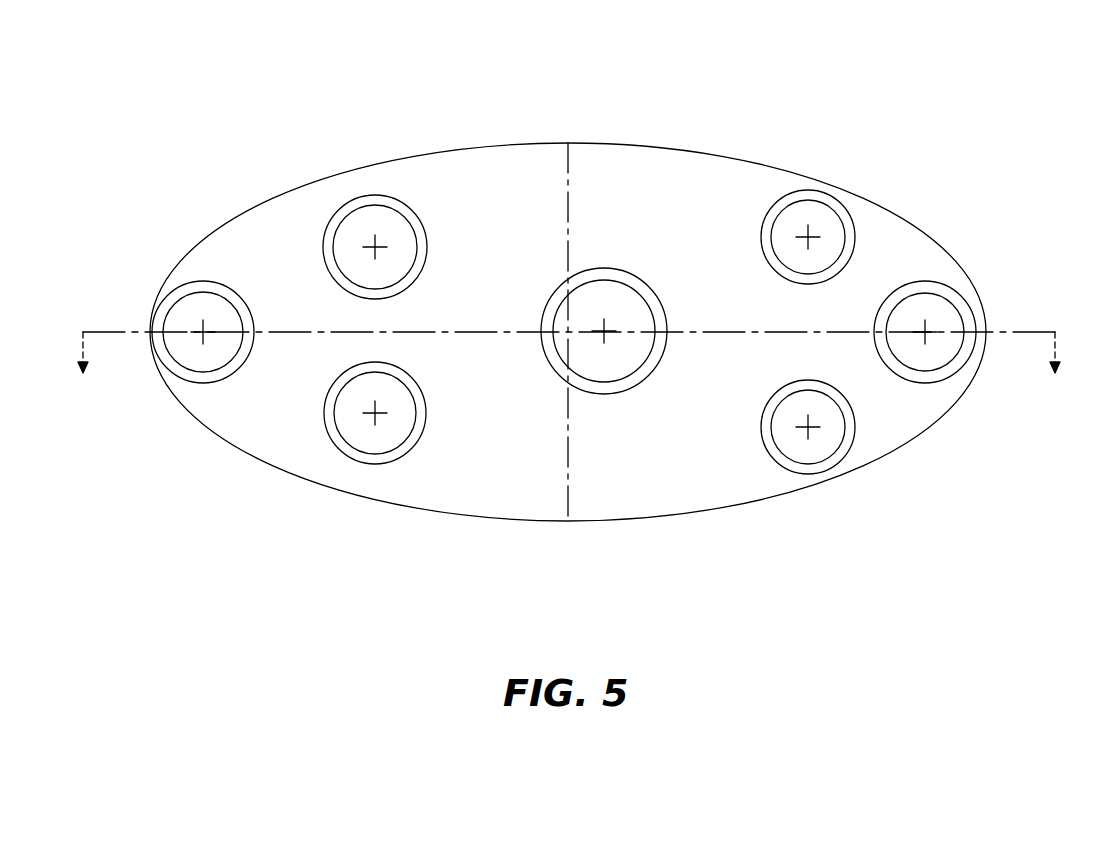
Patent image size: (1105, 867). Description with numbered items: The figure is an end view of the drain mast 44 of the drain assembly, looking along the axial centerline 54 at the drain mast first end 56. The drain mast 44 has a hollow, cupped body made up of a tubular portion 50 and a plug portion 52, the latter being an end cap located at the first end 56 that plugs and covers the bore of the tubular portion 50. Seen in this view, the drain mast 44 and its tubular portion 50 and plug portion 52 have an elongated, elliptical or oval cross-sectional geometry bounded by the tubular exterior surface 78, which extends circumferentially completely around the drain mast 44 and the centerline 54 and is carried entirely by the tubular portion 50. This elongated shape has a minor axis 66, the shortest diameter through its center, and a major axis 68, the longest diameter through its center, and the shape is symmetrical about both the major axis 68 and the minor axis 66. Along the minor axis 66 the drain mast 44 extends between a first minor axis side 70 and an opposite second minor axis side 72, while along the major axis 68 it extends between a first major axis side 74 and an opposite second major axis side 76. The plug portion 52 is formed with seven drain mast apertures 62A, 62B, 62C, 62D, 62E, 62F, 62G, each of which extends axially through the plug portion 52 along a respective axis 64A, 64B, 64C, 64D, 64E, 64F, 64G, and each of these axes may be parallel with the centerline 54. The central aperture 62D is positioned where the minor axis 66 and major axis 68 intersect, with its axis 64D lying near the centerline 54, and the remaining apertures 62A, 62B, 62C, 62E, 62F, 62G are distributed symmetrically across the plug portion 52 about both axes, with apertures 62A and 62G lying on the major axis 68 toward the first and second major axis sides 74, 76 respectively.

The drain mast 44 is at (924, 100).
The tubular portion 50 is at (903, 216).
The plug portion 52 is at (697, 192).
The axial centerline 54 is at (567, 320).
The first end 56 is at (267, 218).
The drain mast aperture 62A is at (205, 355).
The drain mast aperture 62B is at (362, 220).
The drain mast aperture 62C is at (360, 437).
The drain mast aperture 62D is at (609, 365).
The drain mast aperture 62E is at (822, 216).
The drain mast aperture 62F is at (808, 452).
The drain mast aperture 62G is at (925, 326).
The axis 64A is at (206, 330).
The axis 64B is at (380, 244).
The axis 64C is at (380, 413).
The axis 64D is at (606, 330).
The axis 64E is at (807, 237).
The axis 64F is at (807, 427).
The axis 64G is at (942, 312).
The minor axis 66 is at (568, 175).
The major axis 68 is at (300, 345).
The first minor axis side 70 is at (550, 143).
The second minor axis side 72 is at (548, 522).
The first major axis side 74 is at (150, 352).
The second major axis side 76 is at (982, 352).
The tubular exterior surface 78 is at (440, 516).